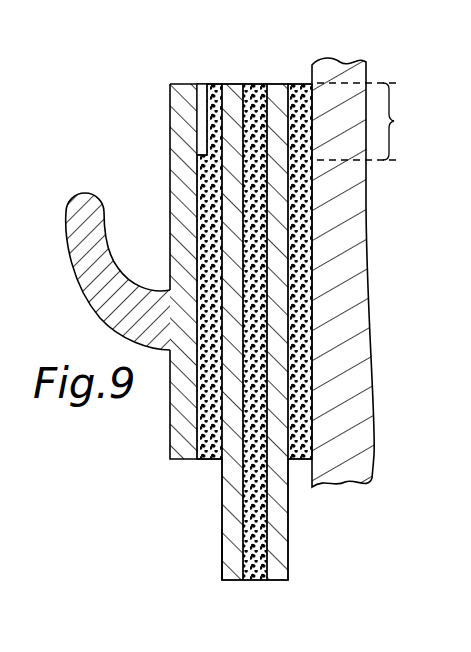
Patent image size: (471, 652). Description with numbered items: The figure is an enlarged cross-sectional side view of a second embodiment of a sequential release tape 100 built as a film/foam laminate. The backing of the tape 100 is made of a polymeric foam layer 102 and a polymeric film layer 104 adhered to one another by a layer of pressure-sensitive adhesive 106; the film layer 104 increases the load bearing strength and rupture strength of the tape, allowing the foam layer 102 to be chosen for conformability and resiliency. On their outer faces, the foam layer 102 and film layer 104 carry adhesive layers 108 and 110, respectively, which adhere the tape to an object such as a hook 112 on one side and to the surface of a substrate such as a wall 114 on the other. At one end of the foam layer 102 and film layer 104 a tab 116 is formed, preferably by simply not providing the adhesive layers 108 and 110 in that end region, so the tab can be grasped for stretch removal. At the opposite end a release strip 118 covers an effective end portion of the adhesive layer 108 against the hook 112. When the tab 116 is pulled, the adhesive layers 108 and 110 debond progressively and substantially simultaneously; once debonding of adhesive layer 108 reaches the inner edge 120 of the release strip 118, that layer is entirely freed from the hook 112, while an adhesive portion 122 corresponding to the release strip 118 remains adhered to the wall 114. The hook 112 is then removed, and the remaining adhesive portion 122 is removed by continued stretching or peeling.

The sequential release tape 100 is at (222, 529).
The polymeric foam layer 102 is at (232, 83).
The polymeric film layer 104 is at (277, 582).
The pressure-sensitive adhesive layer 106 is at (258, 582).
The adhesive layer 108 is at (207, 460).
The adhesive layer 110 is at (302, 83).
The hook 112 is at (90, 282).
The wall 114 is at (360, 288).
The tab 116 is at (223, 567).
The release strip 118 is at (202, 83).
The inner edge 120 is at (168, 175).
The adhesive portion 122 is at (380, 121).